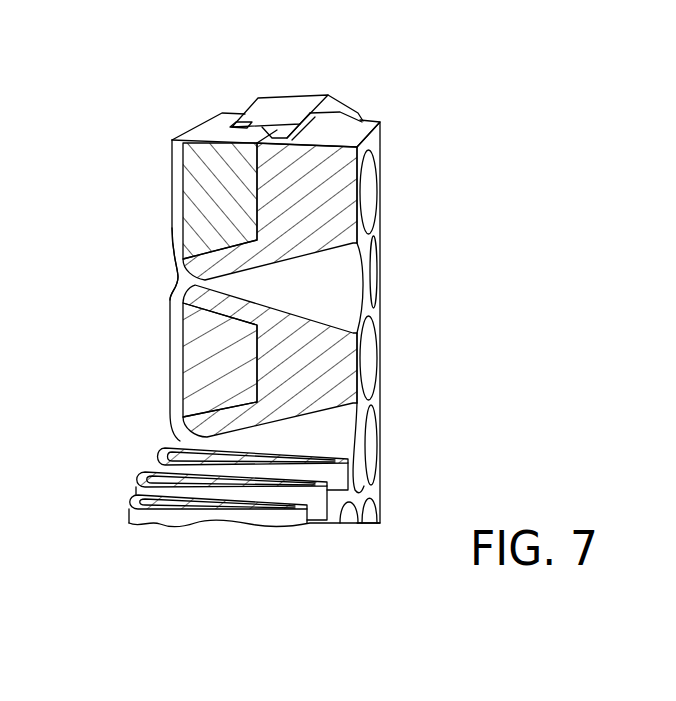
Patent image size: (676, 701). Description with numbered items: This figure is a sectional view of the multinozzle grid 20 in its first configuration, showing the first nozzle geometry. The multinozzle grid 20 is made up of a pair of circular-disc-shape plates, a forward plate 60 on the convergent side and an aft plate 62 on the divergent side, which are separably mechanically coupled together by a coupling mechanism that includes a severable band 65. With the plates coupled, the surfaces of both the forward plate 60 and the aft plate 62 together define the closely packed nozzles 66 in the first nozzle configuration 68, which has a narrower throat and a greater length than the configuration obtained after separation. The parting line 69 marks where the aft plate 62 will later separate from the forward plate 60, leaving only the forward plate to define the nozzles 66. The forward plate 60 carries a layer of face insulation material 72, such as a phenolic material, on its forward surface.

The multinozzle grid 20 is at (151, 106).
The forward plate 60 is at (217, 92).
The aft plate 62 is at (368, 108).
The severable band 65 is at (300, 98).
The nozzles 66 is at (368, 202).
The first nozzle configuration 68 is at (168, 282).
The parting line 69 is at (257, 200).
The face insulation material 72 is at (173, 360).